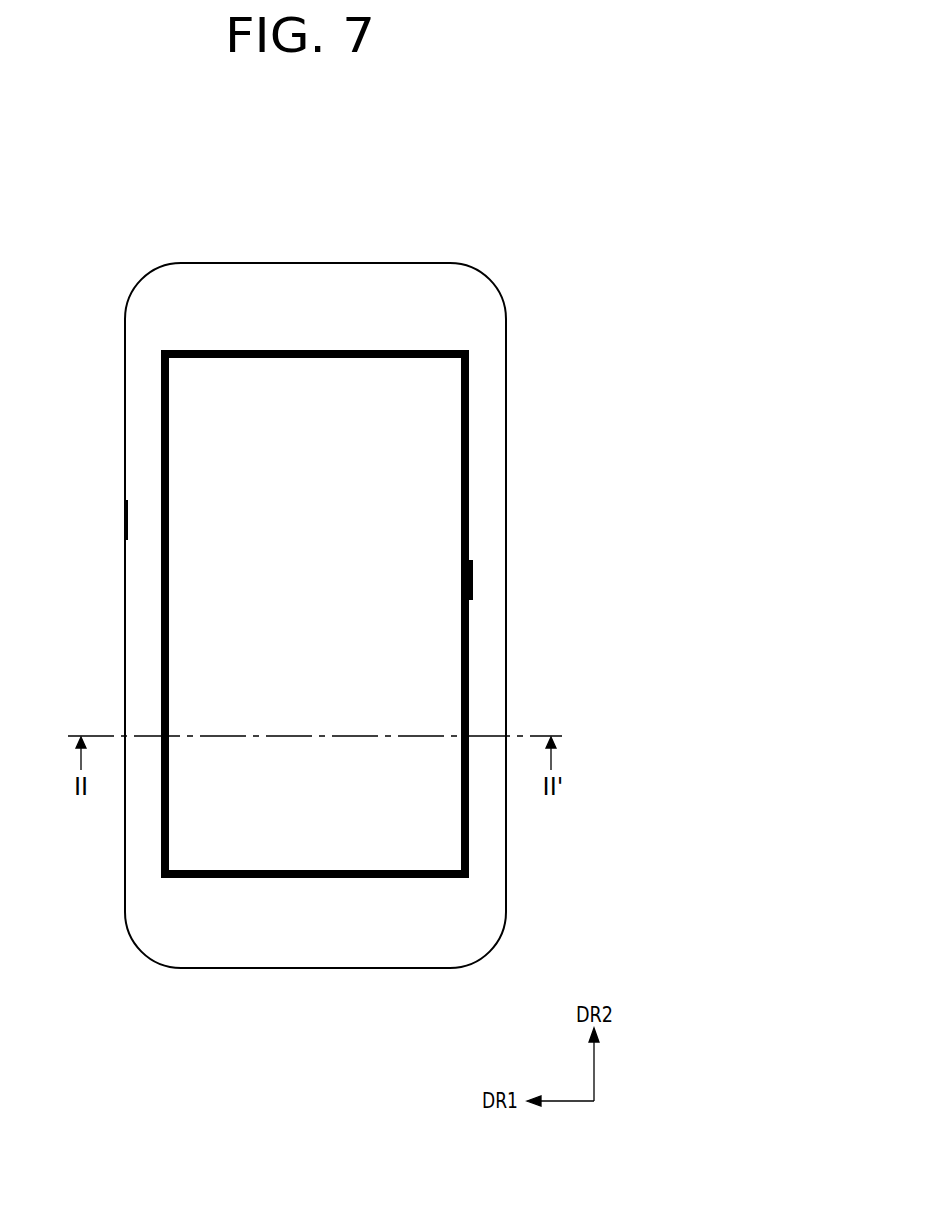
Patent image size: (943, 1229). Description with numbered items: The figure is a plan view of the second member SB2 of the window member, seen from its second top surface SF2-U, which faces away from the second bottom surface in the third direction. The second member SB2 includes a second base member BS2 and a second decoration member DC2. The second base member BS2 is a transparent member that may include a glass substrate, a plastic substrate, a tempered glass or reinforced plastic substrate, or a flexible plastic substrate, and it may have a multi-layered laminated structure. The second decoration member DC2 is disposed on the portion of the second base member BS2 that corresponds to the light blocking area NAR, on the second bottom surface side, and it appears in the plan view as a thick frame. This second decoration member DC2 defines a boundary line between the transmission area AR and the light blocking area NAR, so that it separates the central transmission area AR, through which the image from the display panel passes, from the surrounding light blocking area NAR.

The second member SB2 is at (427, 203).
The second top surface SF2-U is at (277, 285).
The second base member BS2 is at (437, 514).
The second decoration member DC2 is at (468, 580).
The light blocking area NAR is at (142, 509).
The transmission area AR is at (202, 575).